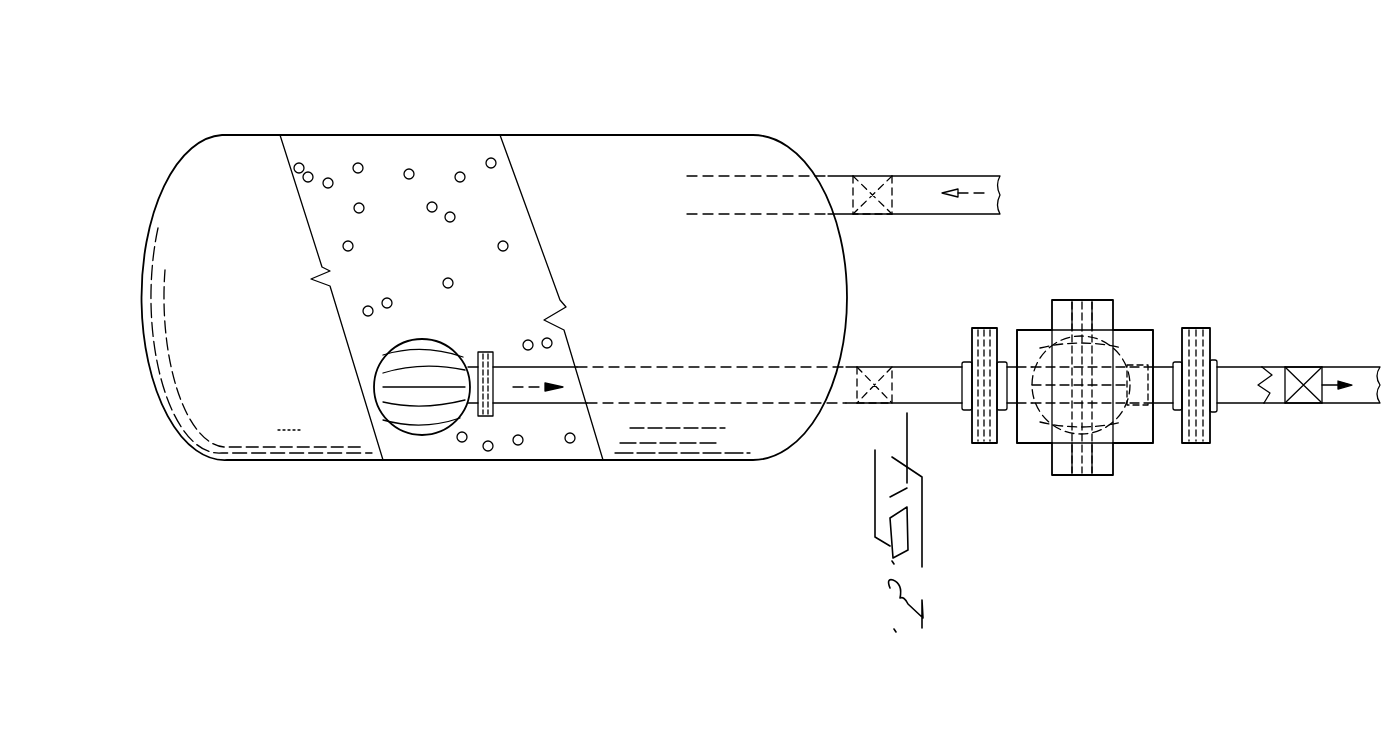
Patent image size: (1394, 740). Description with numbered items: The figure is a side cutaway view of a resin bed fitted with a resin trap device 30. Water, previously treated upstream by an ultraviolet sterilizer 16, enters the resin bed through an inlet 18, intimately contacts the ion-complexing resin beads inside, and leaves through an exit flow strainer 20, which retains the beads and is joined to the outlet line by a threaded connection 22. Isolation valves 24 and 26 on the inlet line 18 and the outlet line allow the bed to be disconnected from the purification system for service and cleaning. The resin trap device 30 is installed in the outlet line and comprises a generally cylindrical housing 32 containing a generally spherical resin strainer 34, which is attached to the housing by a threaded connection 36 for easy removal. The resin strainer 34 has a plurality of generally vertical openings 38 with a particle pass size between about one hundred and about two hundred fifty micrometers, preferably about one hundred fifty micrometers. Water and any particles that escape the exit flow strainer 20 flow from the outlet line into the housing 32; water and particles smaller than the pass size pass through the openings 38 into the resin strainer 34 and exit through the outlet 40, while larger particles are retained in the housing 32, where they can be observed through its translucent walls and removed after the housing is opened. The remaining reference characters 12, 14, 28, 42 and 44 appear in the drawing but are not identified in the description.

The tank 12 is at (843, 408).
The fluid 14 is at (397, 122).
The ultraviolet sterilizer 16 is at (326, 179).
The inlet line 18 is at (930, 175).
The exit flow strainer 20 is at (412, 412).
The threaded connection 22 is at (487, 418).
The isolation valve 24 is at (870, 175).
The isolation valve 26 is at (880, 366).
The valve body 28 is at (1040, 445).
The resin trap device 30 is at (1137, 328).
The housing 32 is at (982, 422).
The resin strainer 34 is at (1033, 327).
The threaded connection 36 is at (1205, 328).
The openings 38 is at (1300, 367).
The outlet 40 is at (1082, 488).
The valve seat 42 is at (1147, 443).
The valve stem 44 is at (1095, 478).